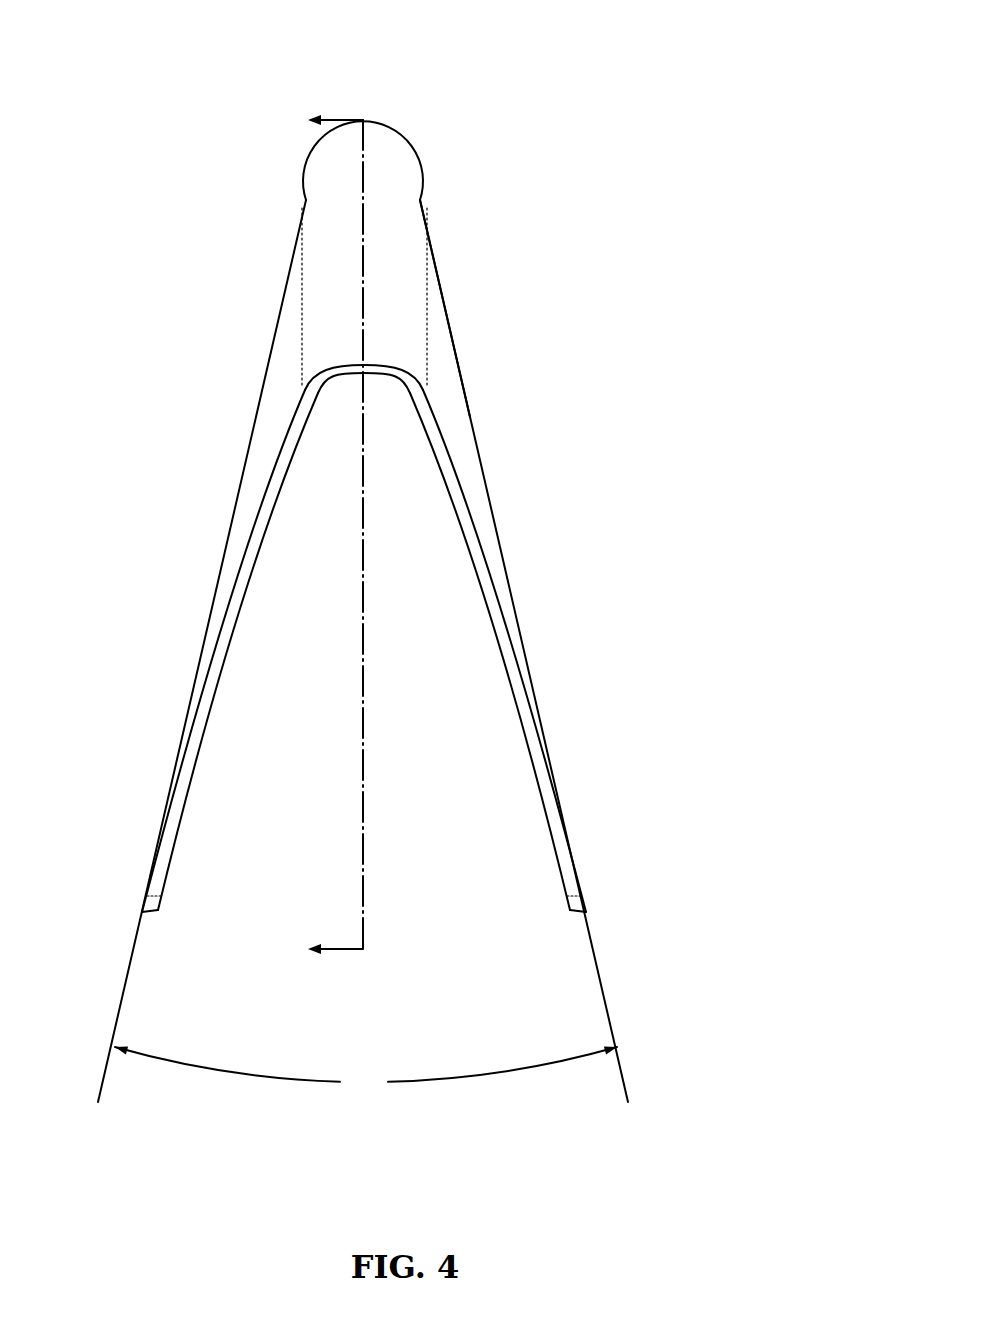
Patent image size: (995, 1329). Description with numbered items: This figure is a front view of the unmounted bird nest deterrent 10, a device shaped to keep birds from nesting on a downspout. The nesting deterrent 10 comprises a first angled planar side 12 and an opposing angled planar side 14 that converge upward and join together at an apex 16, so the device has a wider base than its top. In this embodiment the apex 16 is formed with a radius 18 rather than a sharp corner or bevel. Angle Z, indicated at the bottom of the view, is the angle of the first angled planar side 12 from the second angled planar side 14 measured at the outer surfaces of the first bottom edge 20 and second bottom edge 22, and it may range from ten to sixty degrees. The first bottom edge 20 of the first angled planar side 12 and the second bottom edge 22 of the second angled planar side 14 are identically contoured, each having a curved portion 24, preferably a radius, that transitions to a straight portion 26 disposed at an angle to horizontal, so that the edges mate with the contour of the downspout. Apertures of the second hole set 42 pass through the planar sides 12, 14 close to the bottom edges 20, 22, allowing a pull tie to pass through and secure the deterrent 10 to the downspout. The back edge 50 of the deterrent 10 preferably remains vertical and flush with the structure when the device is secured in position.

The nesting deterrent 10 is at (399, 552).
The first angled planar side 12 is at (443, 365).
The opposing angled planar side 14 is at (282, 352).
The apex 16 is at (363, 158).
The radius 18 is at (333, 220).
The first bottom edge 20 is at (485, 557).
The second bottom edge 22 is at (240, 578).
The curved portion 24 is at (200, 722).
The straight portion 26 is at (288, 437).
The second hole set 42 is at (267, 478).
The back edge 50 is at (436, 246).